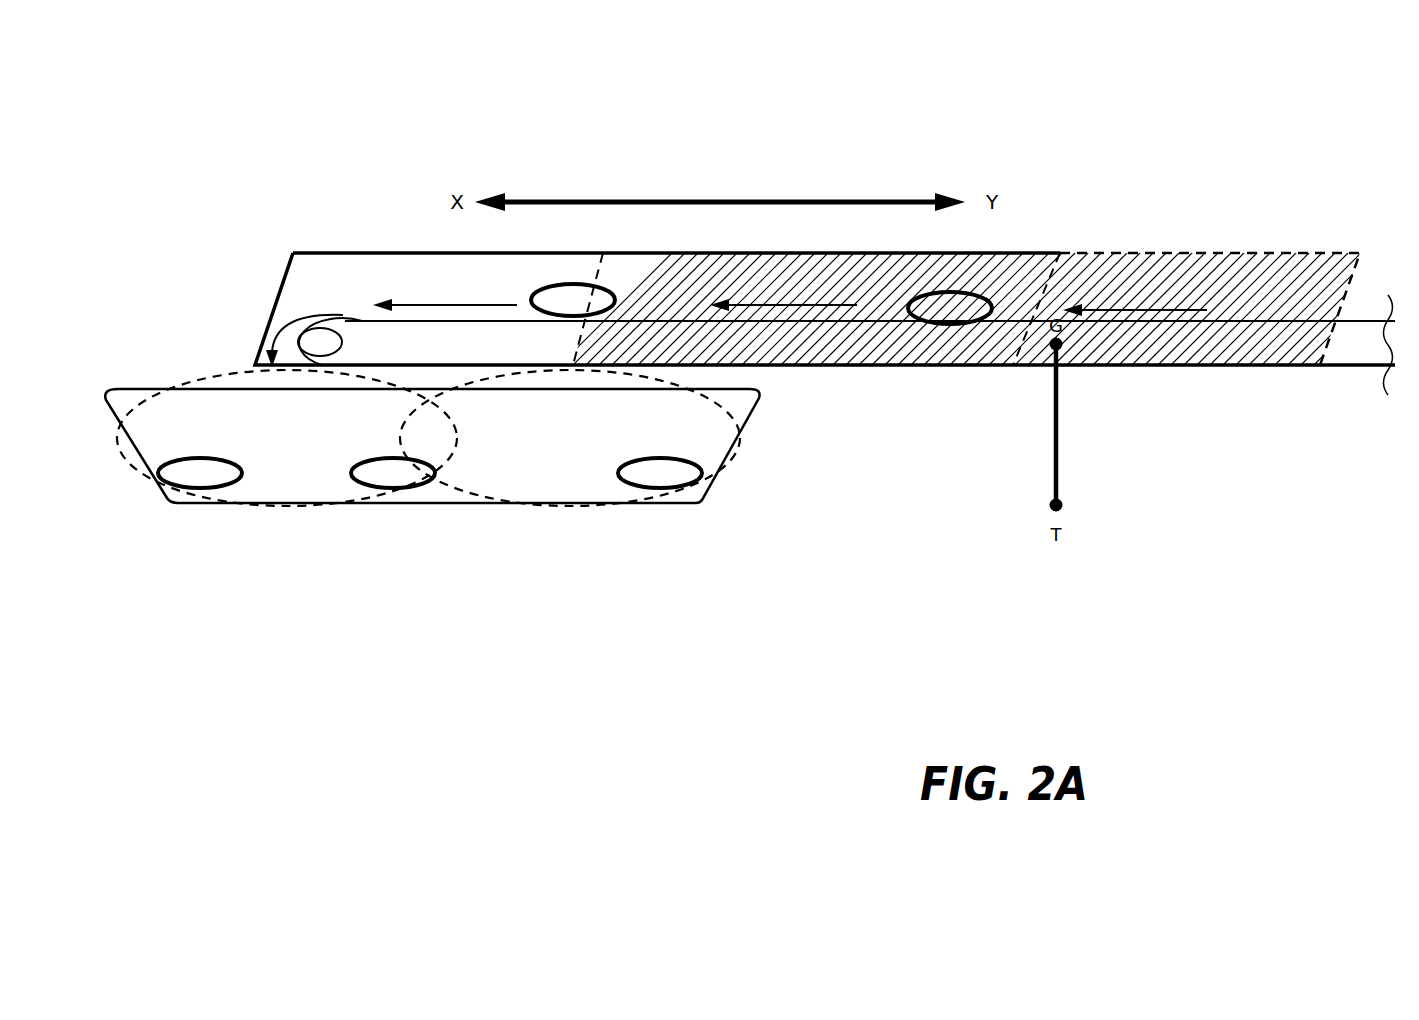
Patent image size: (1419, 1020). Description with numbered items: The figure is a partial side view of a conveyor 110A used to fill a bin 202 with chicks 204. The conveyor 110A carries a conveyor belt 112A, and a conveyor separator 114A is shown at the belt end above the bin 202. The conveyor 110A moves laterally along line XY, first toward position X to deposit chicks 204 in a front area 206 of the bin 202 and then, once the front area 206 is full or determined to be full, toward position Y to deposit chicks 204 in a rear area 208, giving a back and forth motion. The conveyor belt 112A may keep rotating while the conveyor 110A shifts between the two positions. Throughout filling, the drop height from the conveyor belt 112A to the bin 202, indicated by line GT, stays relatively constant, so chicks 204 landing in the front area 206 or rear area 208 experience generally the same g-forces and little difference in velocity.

The conveyor 110A is at (1070, 188).
The conveyor belt 112A is at (1322, 325).
The conveyor separator 114A is at (360, 252).
The bin 202 is at (750, 420).
The chicks 204 is at (227, 487).
The front area 206 is at (118, 447).
The rear area 208 is at (737, 448).